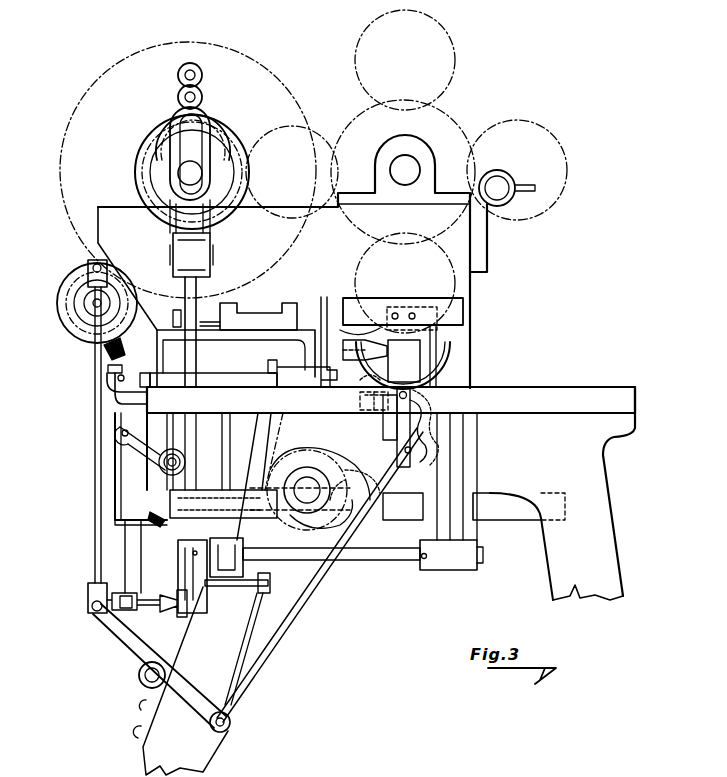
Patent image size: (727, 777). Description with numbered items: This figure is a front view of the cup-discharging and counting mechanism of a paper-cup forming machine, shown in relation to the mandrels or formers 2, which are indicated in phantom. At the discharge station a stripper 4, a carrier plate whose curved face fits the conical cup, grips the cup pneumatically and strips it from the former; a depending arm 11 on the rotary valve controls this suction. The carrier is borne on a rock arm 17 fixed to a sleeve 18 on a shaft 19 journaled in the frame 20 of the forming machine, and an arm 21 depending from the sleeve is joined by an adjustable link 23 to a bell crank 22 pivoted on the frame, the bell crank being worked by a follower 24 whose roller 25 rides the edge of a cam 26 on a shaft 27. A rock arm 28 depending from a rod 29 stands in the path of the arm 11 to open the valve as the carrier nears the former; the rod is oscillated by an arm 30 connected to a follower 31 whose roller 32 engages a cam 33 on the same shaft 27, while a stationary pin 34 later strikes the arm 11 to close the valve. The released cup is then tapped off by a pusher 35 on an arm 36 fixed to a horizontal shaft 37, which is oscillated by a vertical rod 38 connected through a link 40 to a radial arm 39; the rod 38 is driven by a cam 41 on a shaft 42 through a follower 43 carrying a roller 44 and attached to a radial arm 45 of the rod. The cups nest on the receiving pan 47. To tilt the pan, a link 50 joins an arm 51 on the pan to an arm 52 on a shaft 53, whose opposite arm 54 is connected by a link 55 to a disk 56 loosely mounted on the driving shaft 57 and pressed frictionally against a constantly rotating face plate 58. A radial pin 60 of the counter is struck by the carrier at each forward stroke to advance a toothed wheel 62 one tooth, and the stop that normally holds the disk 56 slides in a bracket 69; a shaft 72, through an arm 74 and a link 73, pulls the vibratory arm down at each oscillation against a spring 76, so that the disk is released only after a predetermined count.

The mandrels or formers 2 is at (451, 66).
The stripper 4 is at (420, 344).
The depending arm or pin 11 is at (360, 390).
The rock arm 17 is at (437, 392).
The sleeve 18 is at (375, 515).
The shaft 19 is at (480, 510).
The frame 20 is at (366, 367).
The arm 21 is at (265, 593).
The bell crank 22 is at (208, 590).
The adjustable link 23 is at (237, 587).
The follower 24 is at (173, 256).
The roller 25 is at (178, 73).
The cam 26 is at (153, 146).
The shaft 27 is at (200, 173).
The rock arm 28 is at (325, 297).
The rod 29 is at (270, 313).
The arm 30 is at (176, 319).
The follower 31 is at (176, 226).
The roller 32 is at (200, 95).
The cam 33 is at (146, 182).
The stationary pin 34 is at (372, 415).
The pusher 35 is at (413, 298).
The arm 36 is at (448, 348).
The horizontal shaft 37 is at (365, 560).
The vertical rod 38 is at (115, 450).
The radial arm 39 is at (180, 583).
The link 40 is at (147, 606).
The cam 41 is at (277, 458).
The shaft 42 is at (303, 480).
The follower 43 is at (420, 432).
The roller 44 is at (240, 485).
The radial arm 45 is at (163, 522).
The receiving pan 47 is at (447, 360).
The link 50 is at (320, 578).
The arm 51 is at (436, 448).
The arm 52 is at (185, 712).
The shaft 53 is at (144, 686).
The arm 54 is at (120, 644).
The link 55 is at (95, 512).
The disk 56 is at (64, 320).
The driving shaft 57 is at (84, 302).
The face plate 58 is at (88, 280).
The radial pin 60 is at (343, 332).
The toothed wheel 62 is at (243, 373).
The bracket 69 is at (95, 385).
The shaft 72 is at (172, 452).
The link 73 is at (148, 452).
The arm 74 is at (151, 468).
The spring 76 is at (95, 350).